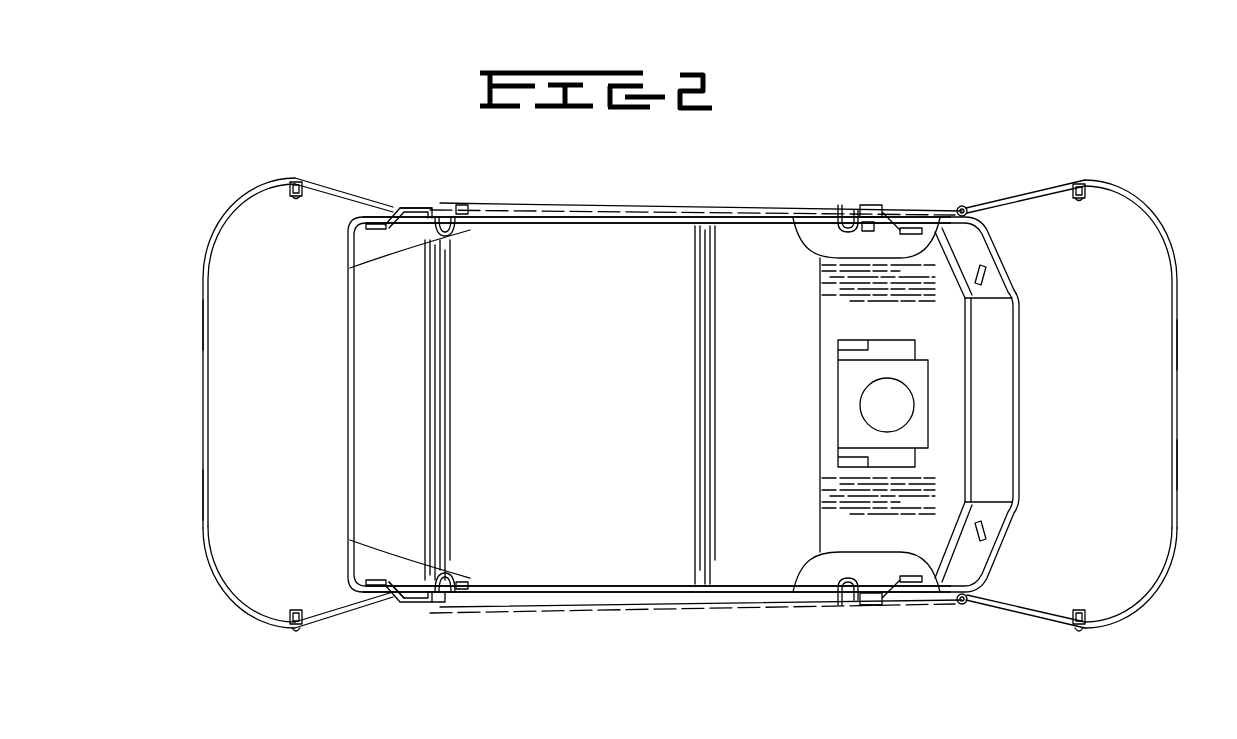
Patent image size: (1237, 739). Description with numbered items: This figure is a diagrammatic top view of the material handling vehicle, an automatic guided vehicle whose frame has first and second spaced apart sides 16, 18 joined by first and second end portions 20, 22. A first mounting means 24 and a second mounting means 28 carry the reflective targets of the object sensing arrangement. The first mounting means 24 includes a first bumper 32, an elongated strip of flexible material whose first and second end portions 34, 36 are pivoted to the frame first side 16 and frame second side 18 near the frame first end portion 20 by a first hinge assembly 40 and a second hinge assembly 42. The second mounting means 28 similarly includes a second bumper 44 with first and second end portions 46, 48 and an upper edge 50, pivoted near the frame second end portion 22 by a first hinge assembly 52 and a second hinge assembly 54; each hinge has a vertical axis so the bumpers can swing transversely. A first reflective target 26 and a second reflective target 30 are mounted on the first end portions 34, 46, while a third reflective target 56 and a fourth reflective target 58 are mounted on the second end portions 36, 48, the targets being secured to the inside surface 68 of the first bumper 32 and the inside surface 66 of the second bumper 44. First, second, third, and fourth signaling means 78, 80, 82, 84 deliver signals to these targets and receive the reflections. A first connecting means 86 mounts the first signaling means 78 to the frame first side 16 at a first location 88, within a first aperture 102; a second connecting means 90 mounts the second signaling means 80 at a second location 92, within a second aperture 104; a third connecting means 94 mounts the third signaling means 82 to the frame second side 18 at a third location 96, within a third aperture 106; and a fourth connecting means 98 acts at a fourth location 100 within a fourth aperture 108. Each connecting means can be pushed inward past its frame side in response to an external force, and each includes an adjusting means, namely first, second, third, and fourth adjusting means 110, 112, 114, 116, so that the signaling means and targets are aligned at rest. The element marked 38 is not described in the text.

The frame first side 16 is at (630, 590).
The frame second side 18 is at (628, 213).
The frame first end portion 20 is at (1022, 432).
The frame second end portion 22 is at (352, 402).
The first mounting means 24 is at (1128, 171).
The first reflective target 26 is at (1092, 614).
The second mounting means 28 is at (364, 158).
The second reflective target 30 is at (286, 617).
The first bumper 32 is at (1172, 345).
The first bumper first end portion 34 is at (1082, 635).
The first bumper second end portion 36 is at (1081, 180).
The right lens 38 is at (1180, 382).
The first hinge assembly 40 is at (963, 605).
The second hinge assembly 42 is at (965, 205).
The second bumper 44 is at (207, 323).
The second bumper first end portion 46 is at (300, 634).
The second bumper second end portion 48 is at (290, 178).
The upper edge 50 is at (203, 402).
The first hinge assembly 52 is at (397, 605).
The second hinge assembly 54 is at (394, 206).
The third reflective target 56 is at (1092, 200).
The fourth reflective target 58 is at (287, 198).
The inside surface 66 is at (208, 498).
The inside surface 68 is at (1172, 466).
The first signaling means 78 is at (446, 608).
The second signaling means 80 is at (845, 612).
The third signaling means 82 is at (460, 204).
The fourth signaling means 84 is at (845, 205).
The first connecting means 86 is at (393, 606).
The first location 88 is at (440, 570).
The second connecting means 90 is at (882, 612).
The second location 92 is at (876, 575).
The third connecting means 94 is at (423, 203).
The third location 96 is at (442, 234).
The fourth connecting means 98 is at (882, 203).
The fourth location 100 is at (866, 233).
The first aperture 102 is at (460, 580).
The second aperture 104 is at (838, 572).
The third aperture 106 is at (824, 228).
The fourth aperture 108 is at (452, 230).
The first adjusting means 110 is at (379, 578).
The second adjusting means 112 is at (911, 575).
The third adjusting means 114 is at (374, 231).
The fourth adjusting means 116 is at (912, 236).